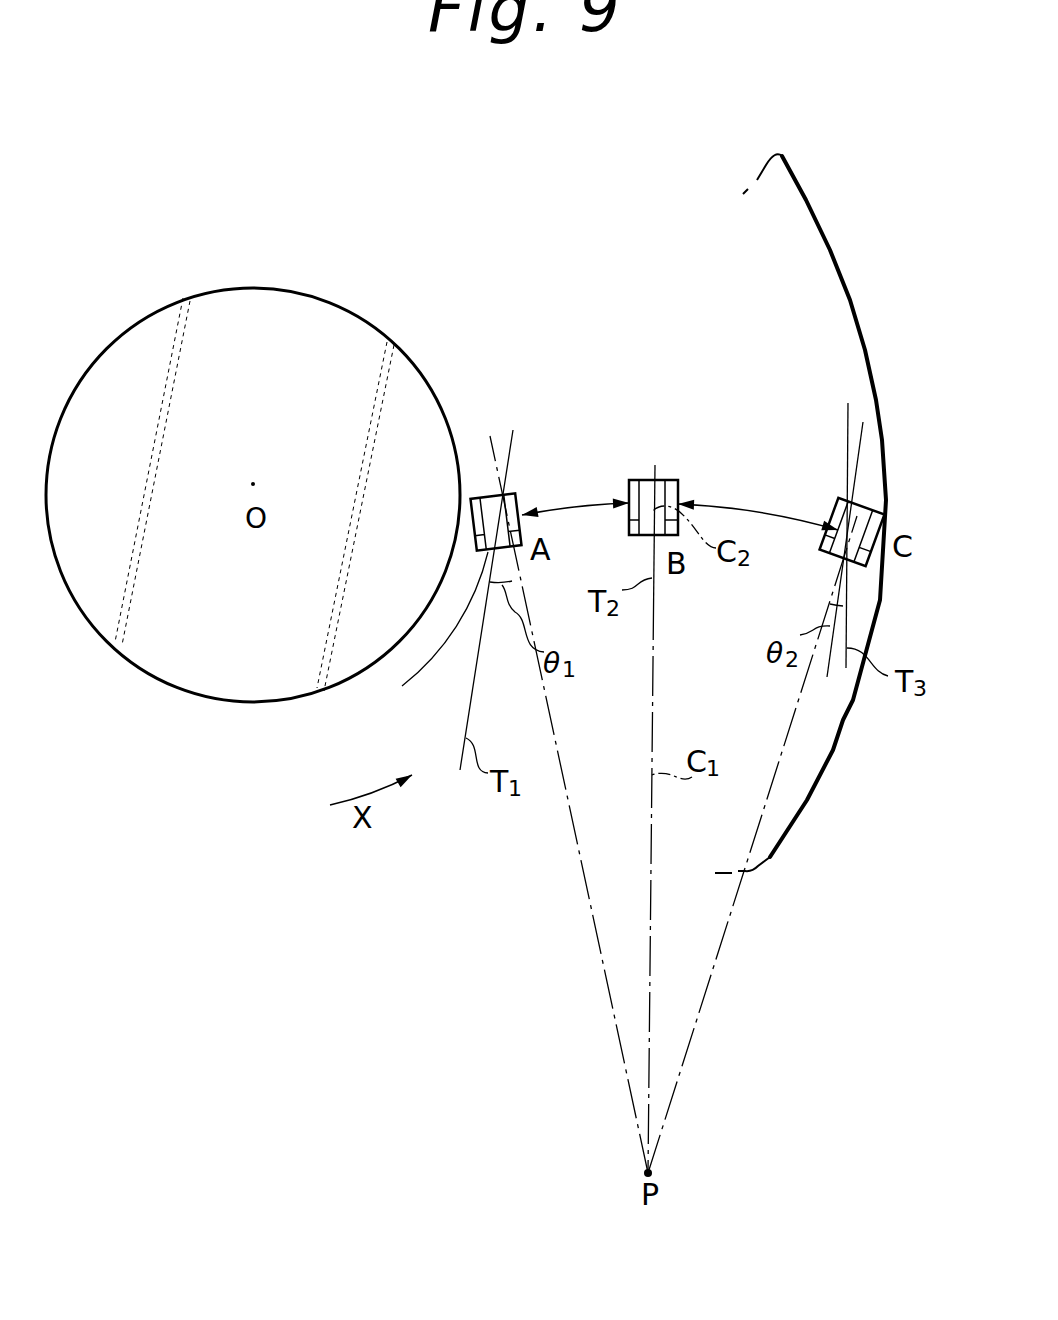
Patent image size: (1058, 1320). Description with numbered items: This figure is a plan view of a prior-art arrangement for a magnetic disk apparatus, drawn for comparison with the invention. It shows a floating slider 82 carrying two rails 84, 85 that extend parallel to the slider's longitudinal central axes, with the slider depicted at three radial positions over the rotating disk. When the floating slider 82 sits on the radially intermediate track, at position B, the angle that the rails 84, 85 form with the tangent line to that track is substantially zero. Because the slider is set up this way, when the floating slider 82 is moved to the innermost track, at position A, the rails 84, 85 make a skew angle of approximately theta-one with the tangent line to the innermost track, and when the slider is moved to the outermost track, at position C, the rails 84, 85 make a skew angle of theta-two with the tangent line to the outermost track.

The floating slider 82 is at (517, 494).
The rail 84 is at (678, 482).
The rail 85 is at (630, 480).